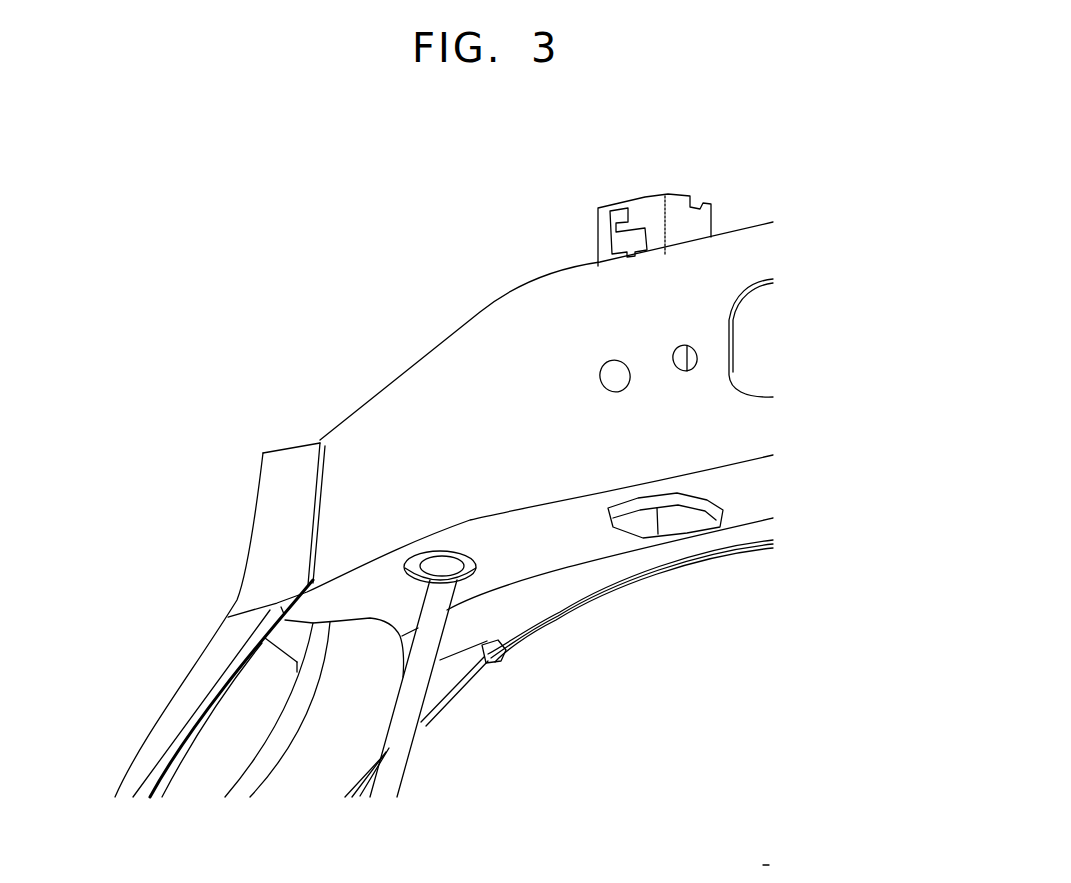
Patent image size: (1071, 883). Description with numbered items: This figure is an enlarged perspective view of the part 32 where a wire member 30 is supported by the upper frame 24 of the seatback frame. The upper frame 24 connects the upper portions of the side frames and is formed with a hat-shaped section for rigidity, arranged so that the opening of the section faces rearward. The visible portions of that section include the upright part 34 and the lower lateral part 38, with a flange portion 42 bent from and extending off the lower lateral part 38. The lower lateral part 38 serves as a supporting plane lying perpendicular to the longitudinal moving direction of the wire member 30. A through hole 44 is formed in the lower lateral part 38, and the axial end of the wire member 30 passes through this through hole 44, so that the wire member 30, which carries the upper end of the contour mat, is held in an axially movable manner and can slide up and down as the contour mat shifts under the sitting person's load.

The upper frame 24 is at (413, 411).
The upright part 34 is at (535, 400).
The part 32 is at (445, 538).
The lower lateral part 38 is at (517, 542).
The through hole 44 is at (423, 556).
The flange portion 42 is at (510, 615).
The wire member 30 is at (402, 752).